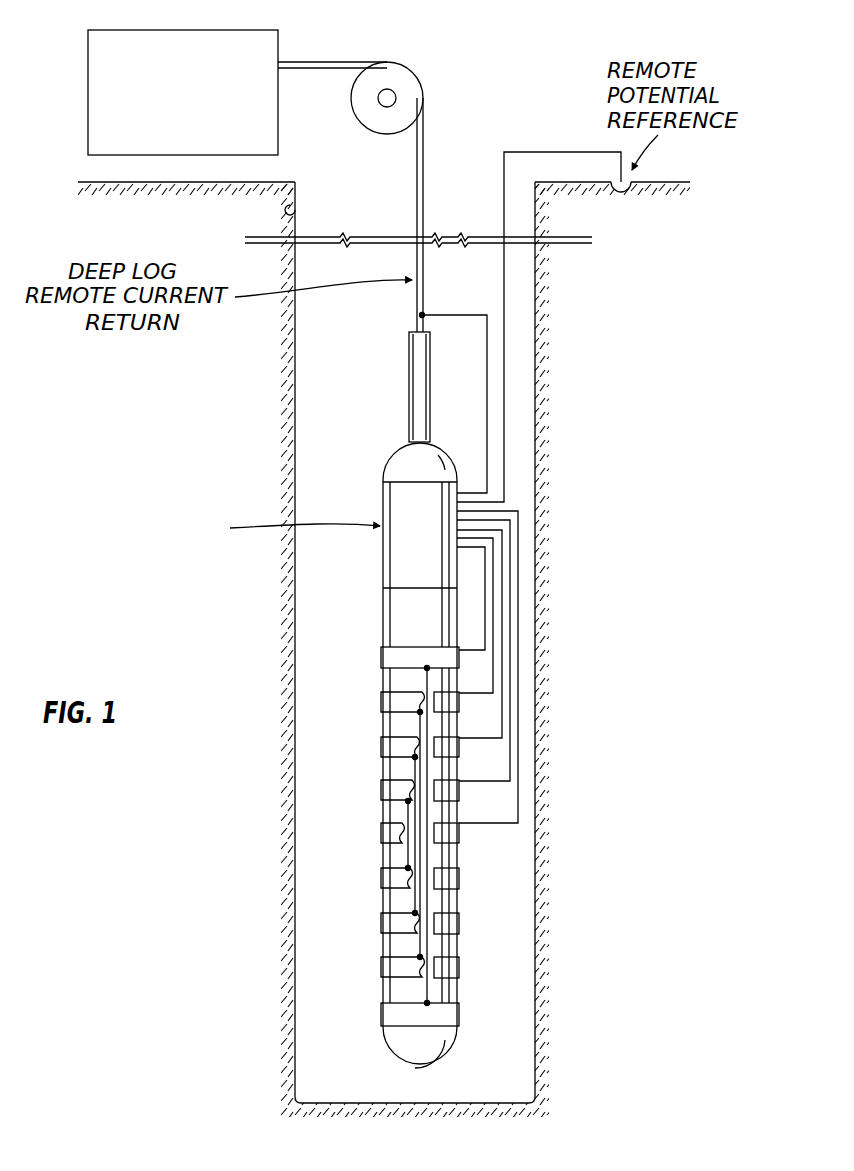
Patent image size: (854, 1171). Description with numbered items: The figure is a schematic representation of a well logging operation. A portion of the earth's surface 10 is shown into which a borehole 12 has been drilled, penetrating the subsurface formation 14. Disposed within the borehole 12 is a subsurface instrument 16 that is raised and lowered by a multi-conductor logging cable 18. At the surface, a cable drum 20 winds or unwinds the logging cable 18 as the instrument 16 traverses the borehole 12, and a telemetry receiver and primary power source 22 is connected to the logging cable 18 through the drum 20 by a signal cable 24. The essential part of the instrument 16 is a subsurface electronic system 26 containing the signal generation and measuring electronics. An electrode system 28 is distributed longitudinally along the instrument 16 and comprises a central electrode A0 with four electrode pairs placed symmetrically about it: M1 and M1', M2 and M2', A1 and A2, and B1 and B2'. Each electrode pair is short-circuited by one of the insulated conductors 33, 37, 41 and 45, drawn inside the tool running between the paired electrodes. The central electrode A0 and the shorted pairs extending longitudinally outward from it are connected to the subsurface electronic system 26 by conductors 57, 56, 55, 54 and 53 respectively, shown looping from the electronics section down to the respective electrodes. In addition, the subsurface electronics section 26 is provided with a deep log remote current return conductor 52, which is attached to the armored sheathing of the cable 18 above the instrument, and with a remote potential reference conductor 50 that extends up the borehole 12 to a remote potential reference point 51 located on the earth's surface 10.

The earth's surface 10 is at (270, 181).
The borehole 12 is at (290, 207).
The subsurface formation 14 is at (582, 306).
The subsurface instrument 16 is at (378, 454).
The multi-conductor logging cable 18 is at (425, 158).
The cable drum 20 is at (420, 83).
The telemetry receiver and primary power source 22 is at (221, 30).
The signal cable 24 is at (344, 62).
The subsurface electronic system 26 is at (385, 563).
The electrode system 28 is at (306, 812).
The insulated conductor 33 is at (408, 856).
The insulated conductor 37 is at (415, 902).
The insulated conductor 41 is at (420, 947).
The insulated conductor 45 is at (427, 993).
The remote potential reference conductor 50 is at (505, 375).
The remote potential reference point 51 is at (630, 181).
The deep log remote current return conductor 52 is at (458, 315).
The conductor 53 is at (486, 572).
The conductor 54 is at (494, 590).
The conductor 55 is at (503, 618).
The conductor 56 is at (511, 655).
The conductor 57 is at (519, 800).
The electrode B1 is at (381, 657).
The electrode A1 is at (381, 702).
The electrode M2 is at (384, 746).
The electrode M1 is at (384, 791).
The central electrode A0 is at (381, 833).
The electrode M1' is at (384, 880).
The electrode M2' is at (384, 924).
The electrode A2 is at (381, 968).
The electrode B2' is at (384, 1018).